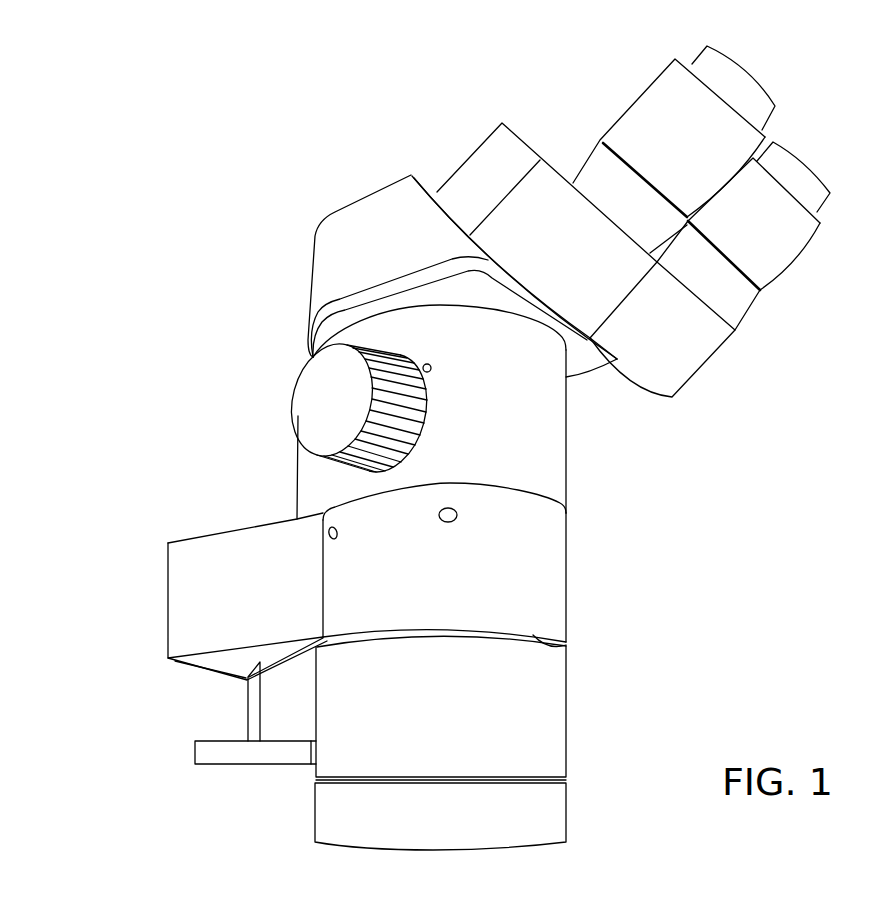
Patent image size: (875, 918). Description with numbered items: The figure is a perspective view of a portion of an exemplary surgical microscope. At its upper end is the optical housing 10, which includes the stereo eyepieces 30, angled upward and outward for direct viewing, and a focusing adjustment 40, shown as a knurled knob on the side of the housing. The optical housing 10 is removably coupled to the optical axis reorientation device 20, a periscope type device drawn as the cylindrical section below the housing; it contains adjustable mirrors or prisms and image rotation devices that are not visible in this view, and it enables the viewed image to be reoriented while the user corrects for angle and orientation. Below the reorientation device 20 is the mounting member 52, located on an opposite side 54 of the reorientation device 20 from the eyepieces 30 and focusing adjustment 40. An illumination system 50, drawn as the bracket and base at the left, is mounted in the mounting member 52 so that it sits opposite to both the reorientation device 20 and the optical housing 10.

The optical housing 10 is at (540, 434).
The optical axis reorientation device 20 is at (540, 557).
The stereo eyepieces 30 is at (685, 353).
The focusing adjustment 40 is at (313, 412).
The illumination system 50 is at (280, 698).
The mounting member 52 is at (457, 724).
The opposite side 54 is at (537, 635).